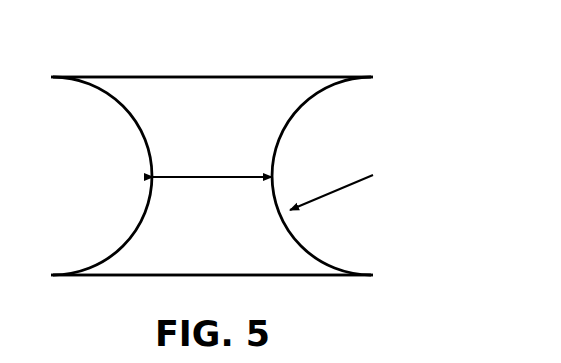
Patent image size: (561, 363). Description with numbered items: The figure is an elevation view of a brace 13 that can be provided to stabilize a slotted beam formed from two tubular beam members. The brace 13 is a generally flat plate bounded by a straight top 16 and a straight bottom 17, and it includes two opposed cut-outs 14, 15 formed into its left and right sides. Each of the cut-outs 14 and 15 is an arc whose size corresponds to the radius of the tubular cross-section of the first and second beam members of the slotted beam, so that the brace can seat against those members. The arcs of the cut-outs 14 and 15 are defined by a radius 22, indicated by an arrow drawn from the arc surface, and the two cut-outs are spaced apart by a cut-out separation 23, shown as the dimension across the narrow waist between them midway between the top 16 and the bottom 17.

The brace 13 is at (426, 123).
The cut-out 14 is at (118, 251).
The cut-out 15 is at (305, 249).
The top 16 is at (192, 77).
The bottom 17 is at (93, 277).
The radius 22 is at (322, 192).
The cut-out separation 23 is at (193, 173).